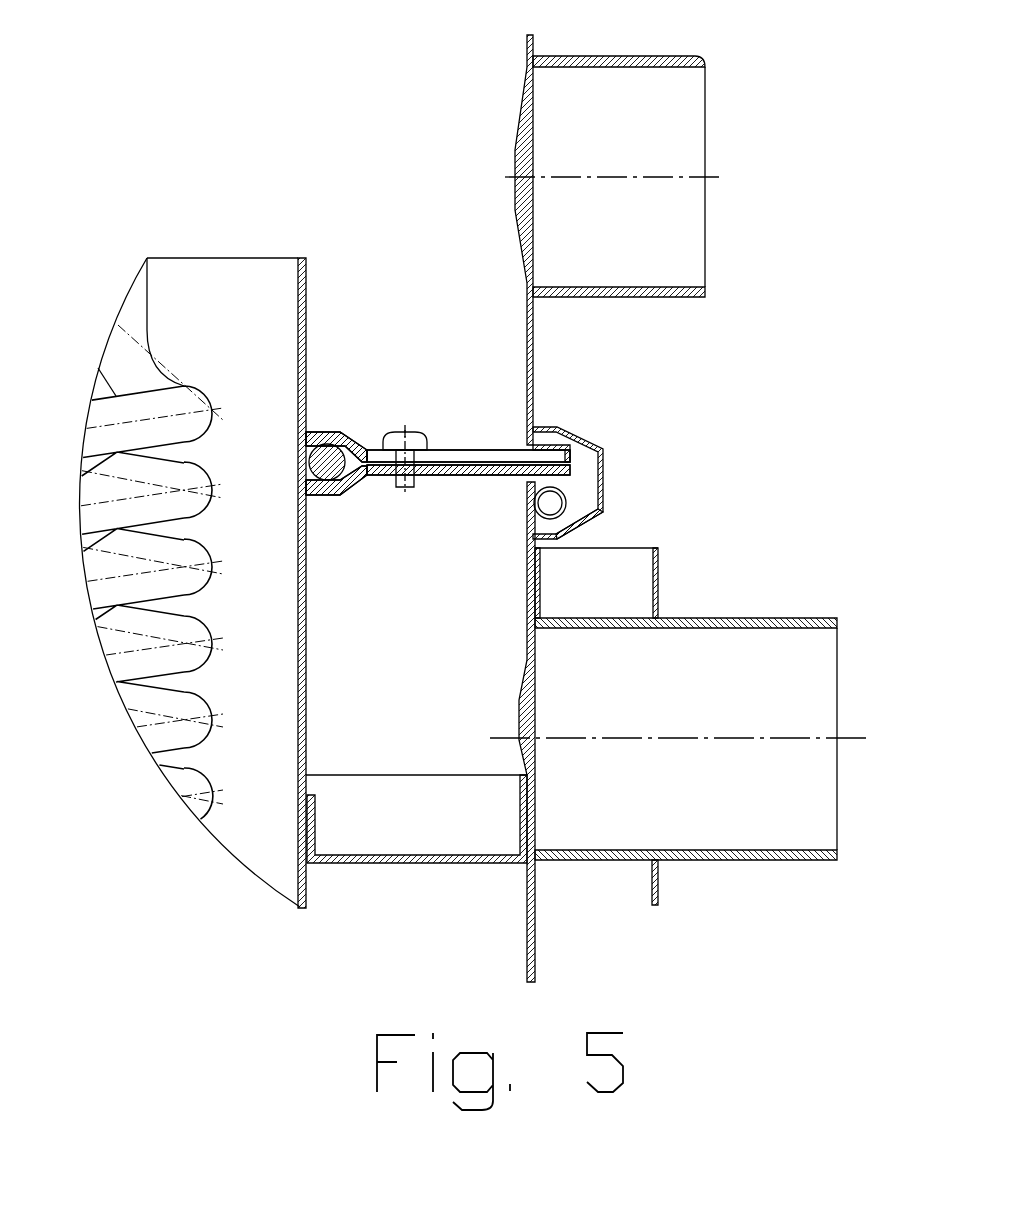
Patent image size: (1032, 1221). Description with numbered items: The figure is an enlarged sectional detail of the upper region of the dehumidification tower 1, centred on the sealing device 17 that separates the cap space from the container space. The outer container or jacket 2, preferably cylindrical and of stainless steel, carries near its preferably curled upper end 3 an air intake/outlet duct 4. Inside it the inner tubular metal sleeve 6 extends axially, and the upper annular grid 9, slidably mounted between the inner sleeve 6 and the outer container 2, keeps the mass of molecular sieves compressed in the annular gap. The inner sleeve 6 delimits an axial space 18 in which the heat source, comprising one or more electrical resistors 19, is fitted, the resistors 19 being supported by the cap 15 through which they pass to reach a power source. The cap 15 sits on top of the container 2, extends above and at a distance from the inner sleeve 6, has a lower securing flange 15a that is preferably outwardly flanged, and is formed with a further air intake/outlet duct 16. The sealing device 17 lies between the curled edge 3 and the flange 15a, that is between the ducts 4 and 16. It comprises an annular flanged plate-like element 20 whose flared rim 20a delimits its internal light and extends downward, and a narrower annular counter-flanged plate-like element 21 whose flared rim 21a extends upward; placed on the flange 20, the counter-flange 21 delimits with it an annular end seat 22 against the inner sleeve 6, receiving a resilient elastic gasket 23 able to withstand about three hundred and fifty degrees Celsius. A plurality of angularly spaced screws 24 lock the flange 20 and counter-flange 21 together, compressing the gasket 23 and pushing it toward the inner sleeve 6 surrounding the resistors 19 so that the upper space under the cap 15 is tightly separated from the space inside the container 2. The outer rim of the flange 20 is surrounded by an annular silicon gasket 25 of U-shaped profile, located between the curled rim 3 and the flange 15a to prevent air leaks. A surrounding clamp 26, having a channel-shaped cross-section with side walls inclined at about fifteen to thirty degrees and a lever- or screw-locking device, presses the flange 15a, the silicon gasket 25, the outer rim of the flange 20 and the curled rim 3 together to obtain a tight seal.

The dehumidification tower 1 is at (665, 924).
The outer container or jacket 2 is at (548, 931).
The upper end of the outer container 3 is at (580, 513).
The air intake/outlet opening or duct 4 is at (758, 833).
The inner tubular metal sleeve 6 is at (306, 737).
The upper annular grid 9 is at (401, 862).
The cap 15 is at (535, 358).
The securing flange 15a is at (560, 440).
The air intake/outlet opening or duct 16 is at (622, 88).
The sealing device 17 is at (463, 452).
The axial light or space 18 is at (262, 860).
The electrical resistors 19 is at (206, 705).
The annular flanged plate-like element 20 is at (512, 477).
The flared rim 20a is at (330, 497).
The annular counter-flanged plate-like element 21 is at (444, 450).
The flared rim 21a is at (327, 432).
The annular end seat 22 is at (358, 440).
The resilient elastic gasket 23 is at (349, 437).
The screws 24 is at (412, 490).
The annular silicon gasket 25 is at (573, 470).
The clamp 26 is at (603, 495).